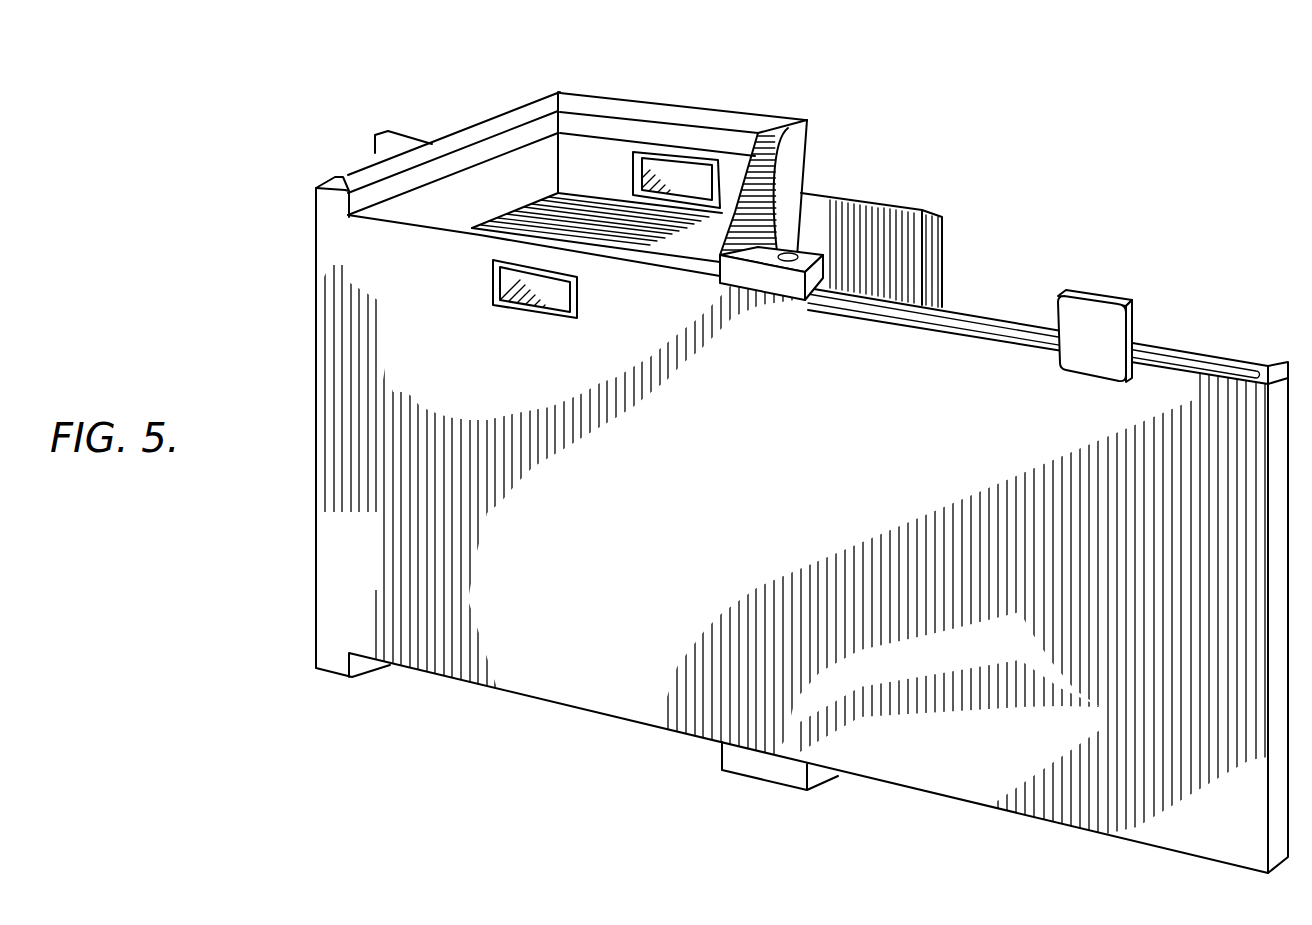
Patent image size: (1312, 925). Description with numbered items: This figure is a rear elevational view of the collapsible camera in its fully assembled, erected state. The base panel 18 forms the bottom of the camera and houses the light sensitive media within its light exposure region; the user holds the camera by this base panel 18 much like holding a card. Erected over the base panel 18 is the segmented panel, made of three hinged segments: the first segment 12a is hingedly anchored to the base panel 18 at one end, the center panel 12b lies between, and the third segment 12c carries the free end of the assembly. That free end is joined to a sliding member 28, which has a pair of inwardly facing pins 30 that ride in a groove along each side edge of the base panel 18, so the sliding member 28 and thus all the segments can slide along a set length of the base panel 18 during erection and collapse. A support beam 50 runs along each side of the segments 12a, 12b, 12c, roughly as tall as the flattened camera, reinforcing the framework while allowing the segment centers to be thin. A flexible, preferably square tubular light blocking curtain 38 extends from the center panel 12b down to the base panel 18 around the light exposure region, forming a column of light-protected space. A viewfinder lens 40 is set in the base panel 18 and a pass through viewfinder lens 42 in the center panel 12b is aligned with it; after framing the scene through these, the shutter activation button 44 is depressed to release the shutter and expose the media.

The base panel 18 is at (618, 651).
The first segment 12a is at (513, 110).
The center panel 12b is at (695, 123).
The third segment 12c is at (788, 128).
The sliding member 28 is at (798, 256).
The inwardly facing pins 30 is at (800, 257).
The light blocking curtain 38 is at (540, 218).
The viewfinder lens 40 is at (498, 284).
The pass through viewfinder lens 42 is at (672, 163).
The shutter activation button 44 is at (1090, 327).
The support beam 50 is at (380, 195).